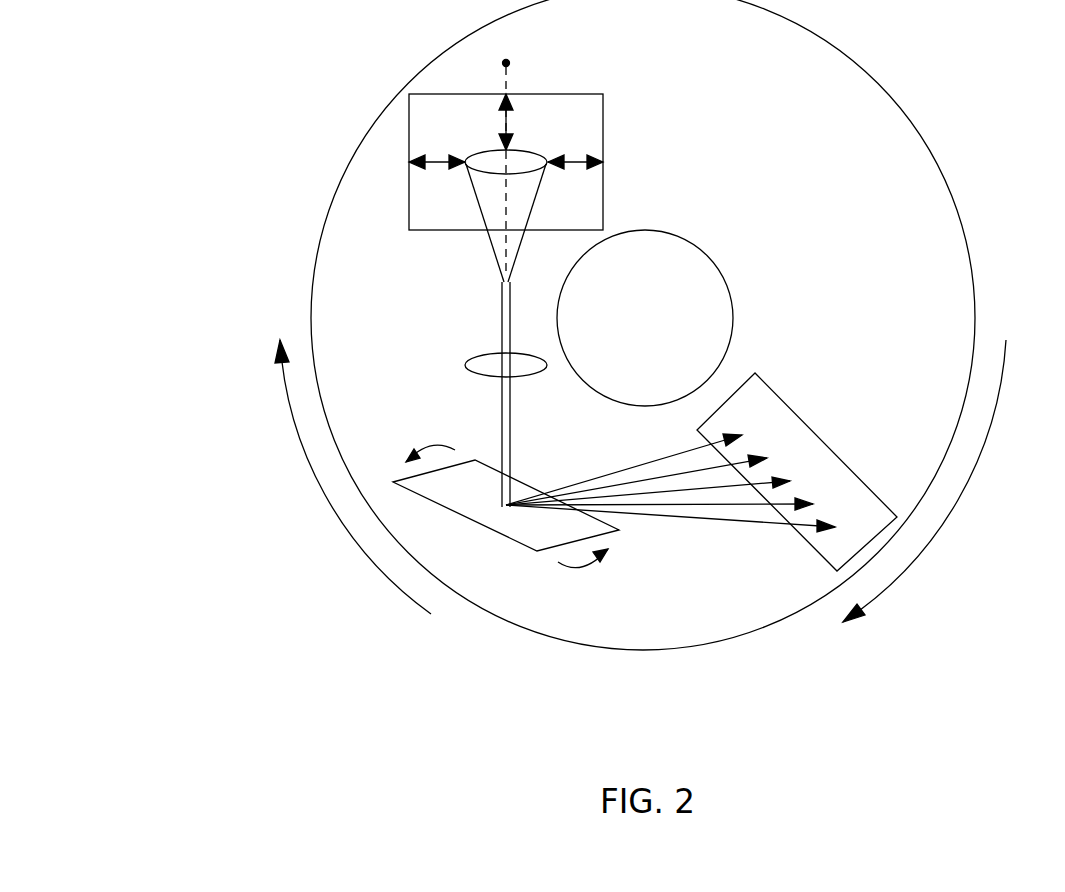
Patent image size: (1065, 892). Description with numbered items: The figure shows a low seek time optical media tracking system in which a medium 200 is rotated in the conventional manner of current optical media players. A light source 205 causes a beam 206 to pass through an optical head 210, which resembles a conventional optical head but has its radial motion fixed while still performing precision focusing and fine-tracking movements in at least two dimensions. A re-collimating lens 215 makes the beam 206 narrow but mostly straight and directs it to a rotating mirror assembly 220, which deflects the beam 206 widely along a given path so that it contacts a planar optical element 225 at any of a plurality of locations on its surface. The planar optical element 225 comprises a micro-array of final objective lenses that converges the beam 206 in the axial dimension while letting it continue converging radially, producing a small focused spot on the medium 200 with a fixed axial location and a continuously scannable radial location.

The medium 200 is at (835, 82).
The light source 205 is at (506, 58).
The beam 206 is at (502, 308).
The optical head 210 is at (408, 118).
The re-collimating lens 215 is at (466, 366).
The rotating mirror assembly 220 is at (483, 527).
The planar optical element 225 is at (838, 543).